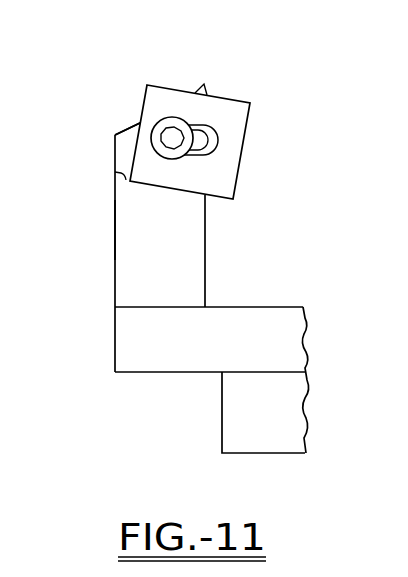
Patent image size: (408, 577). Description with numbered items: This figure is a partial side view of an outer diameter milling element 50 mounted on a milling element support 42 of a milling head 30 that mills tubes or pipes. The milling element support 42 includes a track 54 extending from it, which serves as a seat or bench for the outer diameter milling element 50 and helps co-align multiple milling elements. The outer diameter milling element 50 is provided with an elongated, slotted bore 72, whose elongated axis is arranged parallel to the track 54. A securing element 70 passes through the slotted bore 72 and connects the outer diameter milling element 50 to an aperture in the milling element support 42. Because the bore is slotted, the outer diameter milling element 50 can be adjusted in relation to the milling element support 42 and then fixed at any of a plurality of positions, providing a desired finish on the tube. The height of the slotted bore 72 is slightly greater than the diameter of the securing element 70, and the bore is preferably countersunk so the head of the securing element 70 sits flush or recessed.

The milling head 30 is at (163, 390).
The milling element support 42 is at (116, 217).
The outer diameter milling element 50 is at (160, 84).
The track 54 is at (115, 170).
The securing element 70 is at (159, 122).
The slotted bore 72 is at (198, 145).